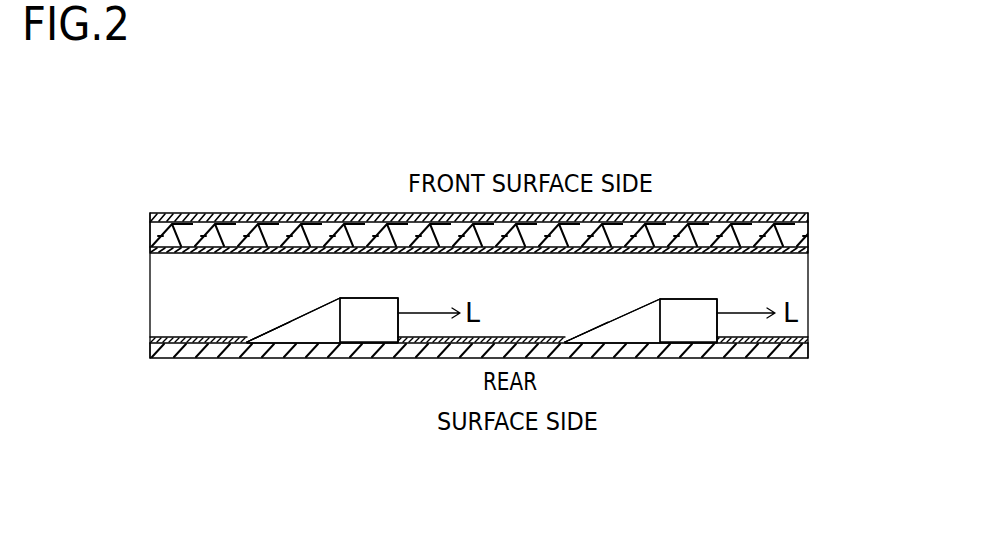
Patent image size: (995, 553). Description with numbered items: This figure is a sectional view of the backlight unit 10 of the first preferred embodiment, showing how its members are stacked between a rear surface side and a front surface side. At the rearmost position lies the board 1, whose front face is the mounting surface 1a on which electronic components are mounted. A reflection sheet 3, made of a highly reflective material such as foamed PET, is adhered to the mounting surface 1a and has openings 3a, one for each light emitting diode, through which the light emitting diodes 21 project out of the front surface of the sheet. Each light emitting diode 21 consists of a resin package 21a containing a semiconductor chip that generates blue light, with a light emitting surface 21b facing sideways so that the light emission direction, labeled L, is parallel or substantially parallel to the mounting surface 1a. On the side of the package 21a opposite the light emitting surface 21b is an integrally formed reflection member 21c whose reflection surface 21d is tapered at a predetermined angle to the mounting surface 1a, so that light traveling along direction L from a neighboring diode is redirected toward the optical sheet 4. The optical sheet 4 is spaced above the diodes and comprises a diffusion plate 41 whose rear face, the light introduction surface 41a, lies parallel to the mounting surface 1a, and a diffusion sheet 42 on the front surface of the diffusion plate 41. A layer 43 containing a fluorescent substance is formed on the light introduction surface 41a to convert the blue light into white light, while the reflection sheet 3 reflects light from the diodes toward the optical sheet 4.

The backlight unit 10 is at (152, 198).
The optical sheet 4 is at (86, 194).
The diffusion sheet 42 is at (150, 217).
The diffusion plate 41 is at (150, 236).
The layer containing a fluorescent substance 43 is at (150, 250).
The light introduction surface 41a is at (182, 250).
The board 1 is at (150, 352).
The mounting surface 1a is at (173, 337).
The reflection sheet 3 is at (150, 341).
The openings 3a is at (367, 345).
The light emitting diodes 21 is at (355, 298).
The resin package 21a is at (348, 343).
The light emitting surface 21b is at (398, 323).
The reflection member 21c is at (300, 330).
The reflection surface 21d is at (274, 330).